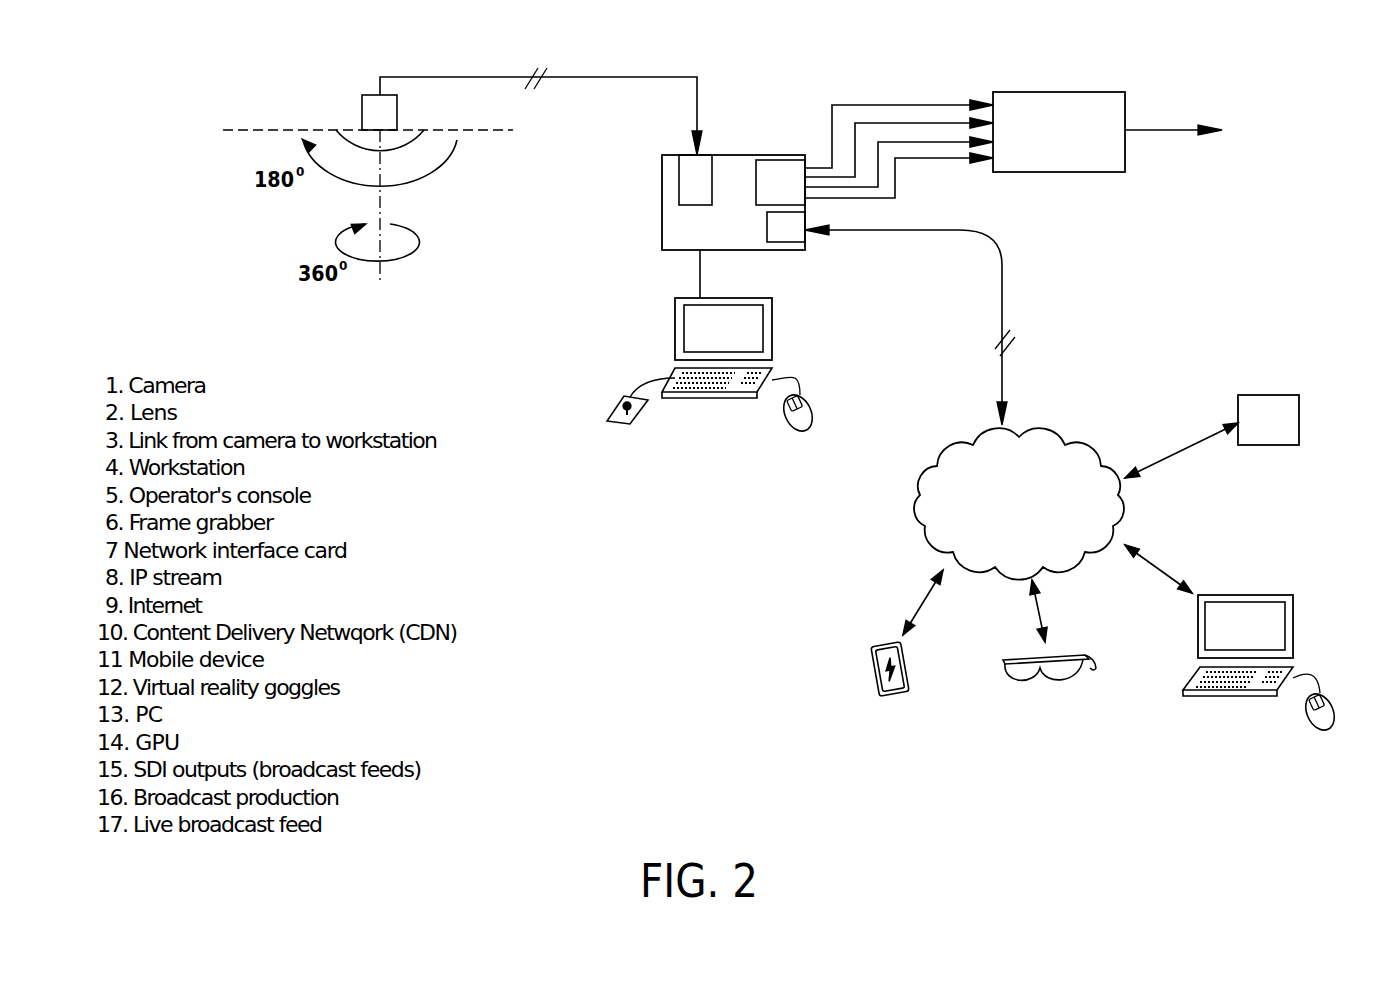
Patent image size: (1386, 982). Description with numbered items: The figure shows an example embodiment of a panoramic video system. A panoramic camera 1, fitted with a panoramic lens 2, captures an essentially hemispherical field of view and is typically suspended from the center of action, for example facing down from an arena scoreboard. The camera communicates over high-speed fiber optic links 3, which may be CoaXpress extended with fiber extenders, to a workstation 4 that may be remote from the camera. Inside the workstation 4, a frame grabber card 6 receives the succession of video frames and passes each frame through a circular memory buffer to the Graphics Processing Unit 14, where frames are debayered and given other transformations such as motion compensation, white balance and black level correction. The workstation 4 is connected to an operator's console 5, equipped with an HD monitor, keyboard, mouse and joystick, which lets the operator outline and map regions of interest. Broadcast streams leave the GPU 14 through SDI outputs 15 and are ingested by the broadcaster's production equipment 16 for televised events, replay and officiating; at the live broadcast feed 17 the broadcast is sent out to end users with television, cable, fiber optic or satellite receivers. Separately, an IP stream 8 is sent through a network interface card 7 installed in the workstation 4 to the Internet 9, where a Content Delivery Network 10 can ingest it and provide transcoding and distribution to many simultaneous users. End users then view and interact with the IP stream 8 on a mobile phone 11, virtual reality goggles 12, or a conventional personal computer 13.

The panoramic camera 1 is at (362, 108).
The panoramic lens 2 is at (400, 150).
The high-speed fiber optic links 3 is at (612, 77).
The workstation 4 is at (662, 200).
The operator's console 5 is at (675, 322).
The frame grabber card 6 is at (695, 180).
The network interface card 7 is at (786, 228).
The IP stream 8 is at (1002, 280).
The Internet 9 is at (1019, 503).
The Content Delivery Network (CDN) 10 is at (1268, 420).
The mobile phone 11 is at (873, 667).
The virtual reality goggles 12 is at (1028, 678).
The personal computer 13 is at (1293, 615).
The Graphics Processing Unit (GPU) 14 is at (780, 182).
The SDI (serial digital output) 15 is at (917, 105).
The broadcaster's production equipment 16 is at (1059, 132).
The live broadcast feed 17 is at (1162, 130).